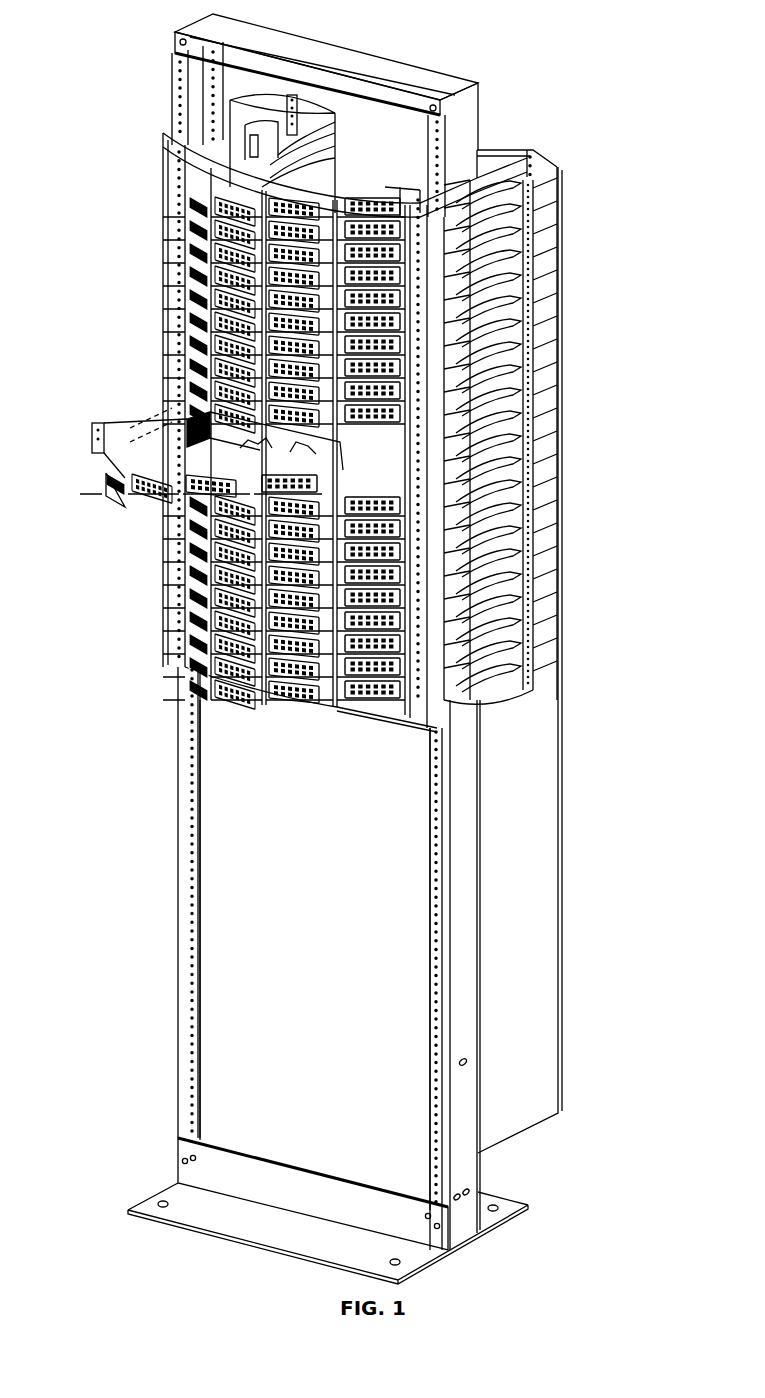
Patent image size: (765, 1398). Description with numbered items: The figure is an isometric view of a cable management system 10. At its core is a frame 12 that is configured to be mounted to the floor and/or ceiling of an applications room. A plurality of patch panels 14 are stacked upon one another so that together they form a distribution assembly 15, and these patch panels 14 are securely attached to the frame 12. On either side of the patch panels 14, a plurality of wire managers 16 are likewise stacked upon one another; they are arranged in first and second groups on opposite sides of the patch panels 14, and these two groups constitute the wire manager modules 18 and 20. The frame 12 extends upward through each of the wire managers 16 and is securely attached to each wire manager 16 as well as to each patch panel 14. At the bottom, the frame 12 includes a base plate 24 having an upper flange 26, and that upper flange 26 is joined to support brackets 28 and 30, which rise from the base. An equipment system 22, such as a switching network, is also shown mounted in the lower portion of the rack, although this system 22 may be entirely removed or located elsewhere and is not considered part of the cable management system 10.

The cable management system 10 is at (122, 30).
The frame 12 is at (372, 46).
The patch panels 14 is at (148, 424).
The distribution assembly 15 is at (347, 212).
The wire managers 16 is at (567, 233).
The wire manager module 18 is at (514, 140).
The wire manager module 20 is at (157, 128).
The equipment system 22 is at (315, 955).
The base plate 24 is at (222, 1214).
The upper flange 26 is at (240, 1168).
The support bracket 28 is at (180, 936).
The support bracket 30 is at (480, 1140).